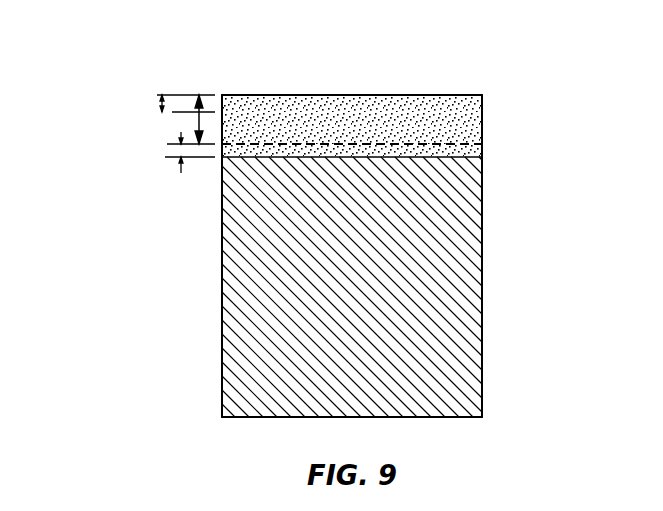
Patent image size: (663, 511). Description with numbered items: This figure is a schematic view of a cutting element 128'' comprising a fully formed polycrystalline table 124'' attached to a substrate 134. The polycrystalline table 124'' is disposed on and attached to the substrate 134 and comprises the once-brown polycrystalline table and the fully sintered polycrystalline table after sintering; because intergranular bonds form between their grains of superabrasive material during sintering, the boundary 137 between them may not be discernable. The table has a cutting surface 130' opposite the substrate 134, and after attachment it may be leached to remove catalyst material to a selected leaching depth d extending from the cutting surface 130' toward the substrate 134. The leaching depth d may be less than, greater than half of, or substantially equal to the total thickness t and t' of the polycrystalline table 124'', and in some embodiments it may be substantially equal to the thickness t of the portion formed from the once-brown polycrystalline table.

The cutting element 128'' is at (260, 256).
The cutting surface 130' is at (352, 61).
The polycrystalline table 124'' is at (402, 126).
The boundary 137 is at (472, 144).
The substrate 134 is at (458, 261).
The leaching depth d is at (160, 100).
The thickness of the brown polycrystalline table t is at (178, 119).
The thickness of the fully sintered portion t' is at (174, 158).